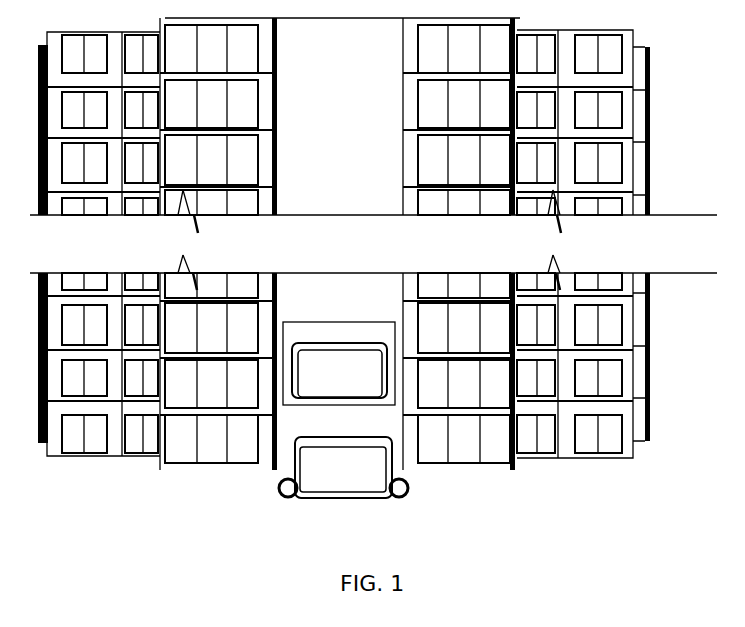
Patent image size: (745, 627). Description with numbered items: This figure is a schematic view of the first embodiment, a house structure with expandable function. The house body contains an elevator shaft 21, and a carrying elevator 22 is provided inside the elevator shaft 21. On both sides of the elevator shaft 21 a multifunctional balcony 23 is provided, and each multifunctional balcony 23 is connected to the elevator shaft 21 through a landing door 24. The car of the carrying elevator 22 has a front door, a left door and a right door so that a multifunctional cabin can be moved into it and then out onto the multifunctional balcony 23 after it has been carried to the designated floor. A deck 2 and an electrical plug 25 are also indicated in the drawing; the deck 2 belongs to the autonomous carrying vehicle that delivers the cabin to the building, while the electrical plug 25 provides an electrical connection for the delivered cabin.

The deck 2 is at (330, 473).
The elevator shaft 21 is at (387, 290).
The carrying elevator 22 is at (657, 173).
The multifunctional balcony 23 is at (212, 458).
The landing door 24 is at (277, 152).
The electrical plug 25 is at (381, 500).